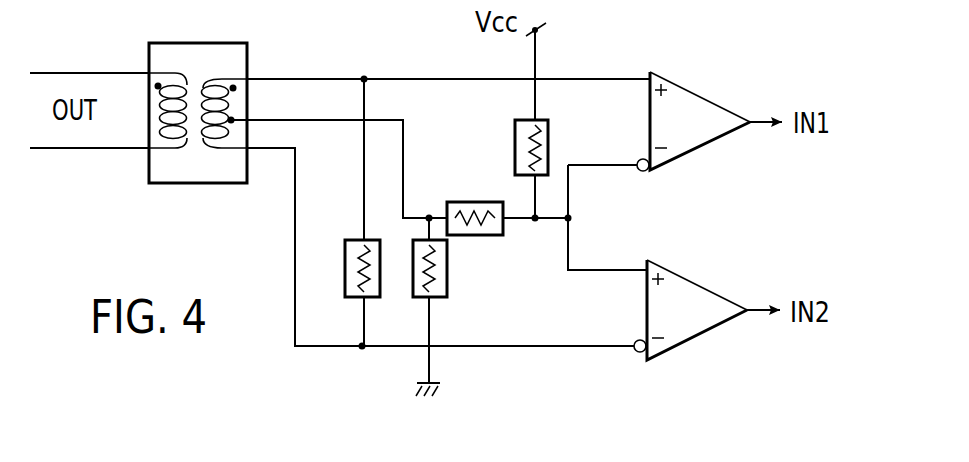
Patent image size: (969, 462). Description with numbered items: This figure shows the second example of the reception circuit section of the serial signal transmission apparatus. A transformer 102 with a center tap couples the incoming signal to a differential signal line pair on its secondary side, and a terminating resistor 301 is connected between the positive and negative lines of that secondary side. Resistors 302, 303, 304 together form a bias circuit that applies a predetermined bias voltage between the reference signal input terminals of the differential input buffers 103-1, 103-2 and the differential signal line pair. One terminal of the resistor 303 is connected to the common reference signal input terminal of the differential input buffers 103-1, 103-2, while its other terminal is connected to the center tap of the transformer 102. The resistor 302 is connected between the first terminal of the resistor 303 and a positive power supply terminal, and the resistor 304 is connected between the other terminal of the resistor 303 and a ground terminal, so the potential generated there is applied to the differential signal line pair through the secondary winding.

The transformer 102 is at (157, 183).
The terminating resistor 301 is at (345, 266).
The resistor 302 is at (515, 143).
The resistor 303 is at (490, 235).
The resistor 304 is at (447, 285).
The differential input buffer 103-1 is at (713, 68).
The differential input buffer 103-2 is at (710, 258).